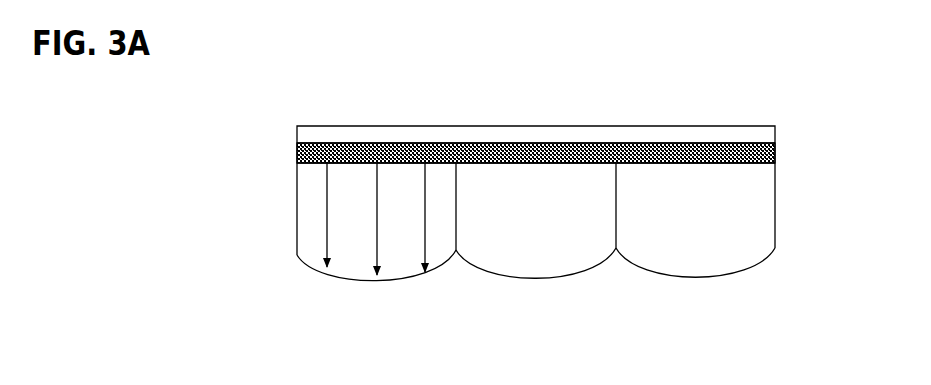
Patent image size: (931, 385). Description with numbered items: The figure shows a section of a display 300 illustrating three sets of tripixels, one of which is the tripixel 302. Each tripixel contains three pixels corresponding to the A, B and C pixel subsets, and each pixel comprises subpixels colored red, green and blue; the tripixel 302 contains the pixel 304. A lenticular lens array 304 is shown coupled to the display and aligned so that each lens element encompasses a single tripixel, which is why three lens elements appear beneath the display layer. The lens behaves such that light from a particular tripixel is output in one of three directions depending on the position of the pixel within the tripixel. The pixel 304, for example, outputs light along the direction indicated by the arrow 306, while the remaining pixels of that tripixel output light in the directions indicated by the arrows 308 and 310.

The display 300 is at (550, 158).
The tripixel 302 is at (444, 135).
The lenticular lens array 304 is at (405, 143).
The arrow 306 is at (322, 273).
The arrow 308 is at (377, 279).
The arrow 310 is at (432, 275).